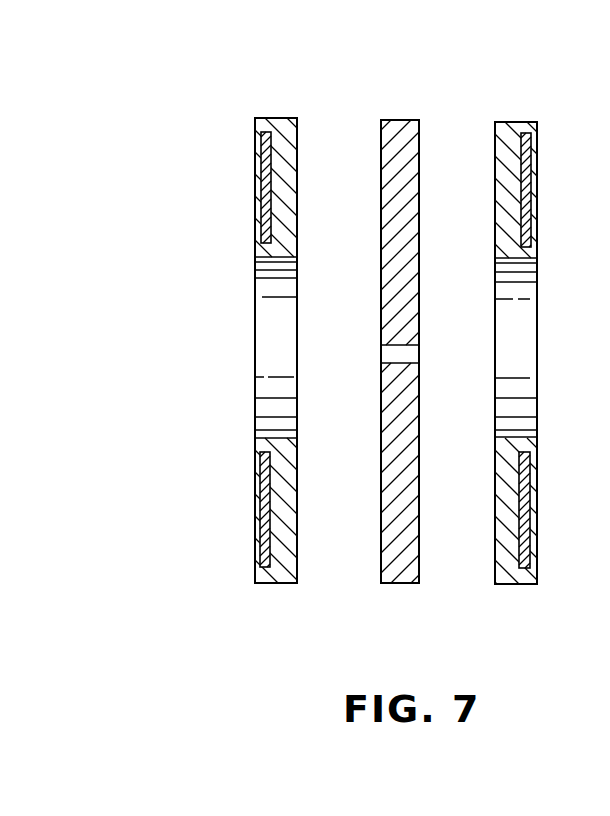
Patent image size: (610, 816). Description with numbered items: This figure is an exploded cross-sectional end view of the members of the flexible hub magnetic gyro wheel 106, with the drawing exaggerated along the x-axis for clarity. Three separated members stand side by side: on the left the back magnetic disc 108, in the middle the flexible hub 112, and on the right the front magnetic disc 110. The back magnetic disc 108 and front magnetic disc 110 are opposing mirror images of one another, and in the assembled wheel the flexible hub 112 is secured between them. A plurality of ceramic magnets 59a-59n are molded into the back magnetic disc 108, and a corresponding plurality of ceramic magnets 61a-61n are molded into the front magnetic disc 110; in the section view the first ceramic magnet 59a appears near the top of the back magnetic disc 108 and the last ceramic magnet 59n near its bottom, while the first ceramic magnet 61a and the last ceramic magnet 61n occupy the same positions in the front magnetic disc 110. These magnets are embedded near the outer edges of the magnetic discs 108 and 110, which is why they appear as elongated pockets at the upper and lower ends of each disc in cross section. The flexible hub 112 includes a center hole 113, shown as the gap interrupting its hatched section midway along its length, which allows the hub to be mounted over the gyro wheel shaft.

The flexible hub magnetic gyro wheel 106 is at (162, 68).
The back magnetic disc 108 is at (266, 128).
The front magnetic disc 110 is at (530, 127).
The flexible hub 112 is at (396, 126).
The center hole 113 is at (405, 357).
The ceramic magnet 59a is at (267, 172).
The ceramic magnet 59n is at (265, 511).
The ceramic magnet 61a is at (524, 170).
The ceramic magnet 61n is at (521, 527).